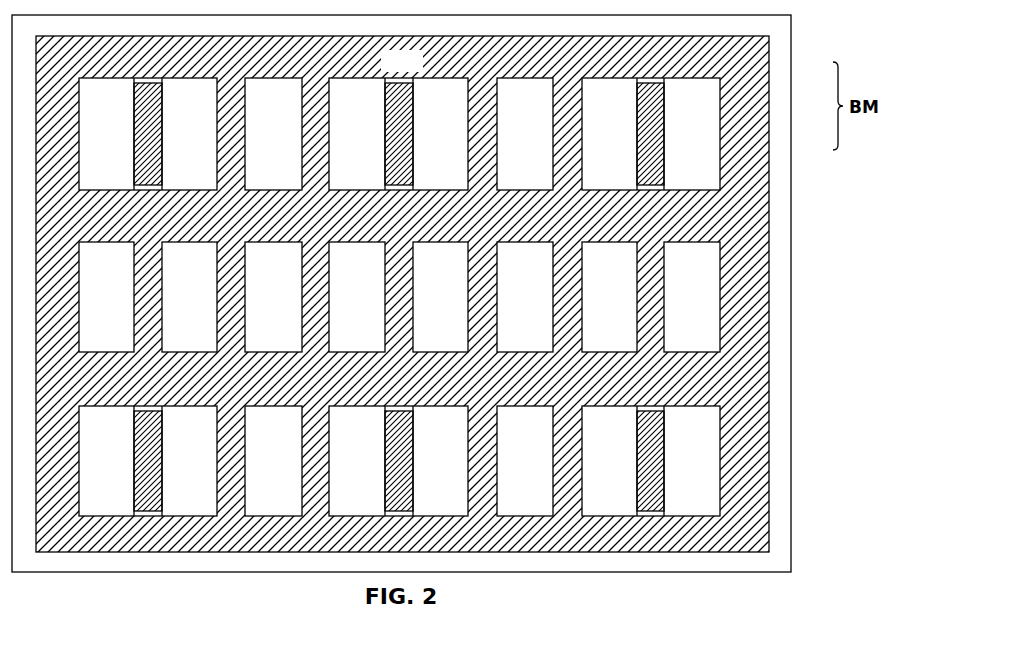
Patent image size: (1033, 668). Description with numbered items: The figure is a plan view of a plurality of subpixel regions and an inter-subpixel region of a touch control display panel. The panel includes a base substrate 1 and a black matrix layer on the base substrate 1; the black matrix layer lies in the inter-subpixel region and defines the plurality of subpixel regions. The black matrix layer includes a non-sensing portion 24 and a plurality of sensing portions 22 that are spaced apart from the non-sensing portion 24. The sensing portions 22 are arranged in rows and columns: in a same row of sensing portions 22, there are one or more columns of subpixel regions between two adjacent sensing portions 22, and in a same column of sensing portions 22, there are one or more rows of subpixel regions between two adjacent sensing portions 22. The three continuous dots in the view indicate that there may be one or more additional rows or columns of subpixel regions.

The base substrate 1 is at (763, 23).
The non-sensing portion 24 is at (748, 71).
The sensing portions 22 is at (650, 133).